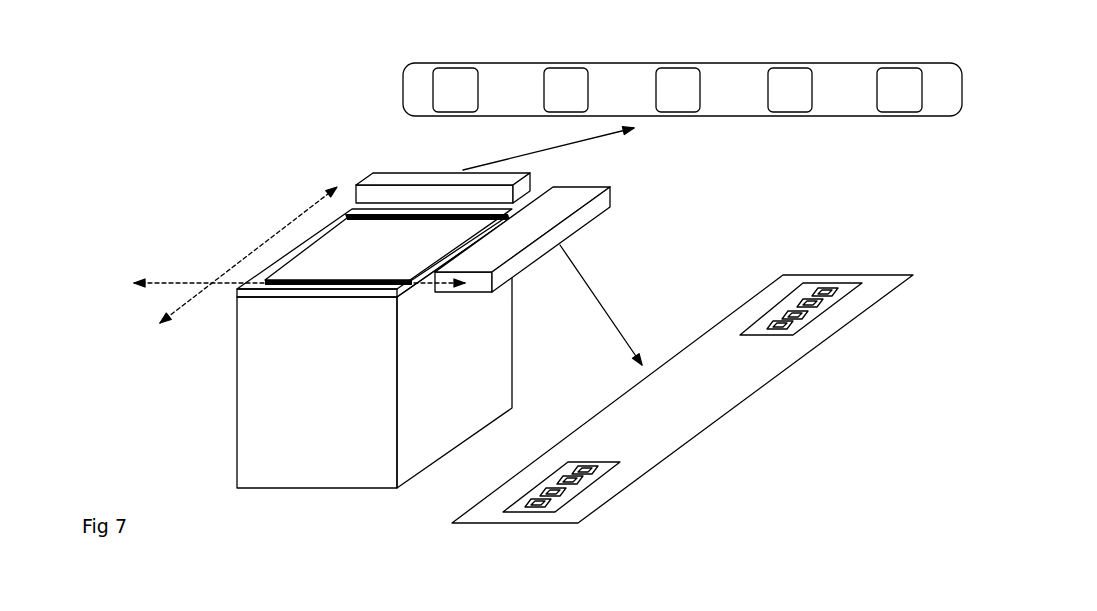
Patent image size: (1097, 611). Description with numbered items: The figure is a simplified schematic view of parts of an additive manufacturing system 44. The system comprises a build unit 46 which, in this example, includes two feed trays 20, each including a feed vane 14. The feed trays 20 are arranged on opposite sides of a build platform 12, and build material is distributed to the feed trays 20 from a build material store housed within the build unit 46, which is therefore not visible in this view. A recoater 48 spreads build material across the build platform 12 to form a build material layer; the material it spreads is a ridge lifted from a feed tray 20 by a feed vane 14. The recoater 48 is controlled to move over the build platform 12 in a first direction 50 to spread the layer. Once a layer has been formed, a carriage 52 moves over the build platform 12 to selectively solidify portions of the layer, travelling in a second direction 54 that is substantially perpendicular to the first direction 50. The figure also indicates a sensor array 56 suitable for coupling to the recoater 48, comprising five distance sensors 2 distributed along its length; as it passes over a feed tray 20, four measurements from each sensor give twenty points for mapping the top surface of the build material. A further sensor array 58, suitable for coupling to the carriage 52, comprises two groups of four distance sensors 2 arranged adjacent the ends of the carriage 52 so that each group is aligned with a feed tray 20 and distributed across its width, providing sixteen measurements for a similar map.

The distance sensor 2 is at (460, 78).
The build platform 12 is at (333, 251).
The feed vane 14 is at (347, 216).
The feed tray 20 is at (352, 208).
The additive manufacturing system 44 is at (372, 305).
The build unit 46 is at (325, 468).
The recoater 48 is at (387, 178).
The first direction 50 is at (163, 322).
The carriage 52 is at (608, 197).
The second direction 54 is at (167, 286).
The sensor array 56 is at (862, 117).
The sensor array 58 is at (733, 380).